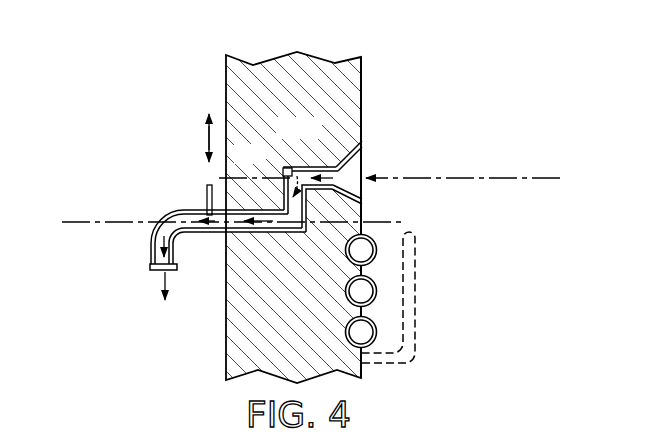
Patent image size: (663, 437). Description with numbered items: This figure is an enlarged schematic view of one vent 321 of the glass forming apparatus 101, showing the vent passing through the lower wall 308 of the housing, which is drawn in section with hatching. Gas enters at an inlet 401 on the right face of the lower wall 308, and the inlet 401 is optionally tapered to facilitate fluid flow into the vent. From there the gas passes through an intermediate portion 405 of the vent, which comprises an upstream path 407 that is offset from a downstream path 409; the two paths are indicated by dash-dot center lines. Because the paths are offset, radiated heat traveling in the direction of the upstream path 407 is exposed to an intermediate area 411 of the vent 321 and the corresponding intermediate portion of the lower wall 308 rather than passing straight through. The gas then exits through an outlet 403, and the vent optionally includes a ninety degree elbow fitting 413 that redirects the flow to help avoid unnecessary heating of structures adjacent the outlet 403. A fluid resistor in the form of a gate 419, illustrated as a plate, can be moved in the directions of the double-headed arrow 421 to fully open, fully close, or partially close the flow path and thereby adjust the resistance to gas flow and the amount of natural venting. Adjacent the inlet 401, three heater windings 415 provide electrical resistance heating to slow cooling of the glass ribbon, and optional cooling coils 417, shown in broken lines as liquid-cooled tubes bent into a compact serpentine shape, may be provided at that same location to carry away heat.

The glass forming apparatus 101 is at (207, 83).
The lower wall 308 is at (322, 68).
The vent 321 is at (367, 142).
The inlet 401 is at (365, 152).
The outlet 403 is at (156, 271).
The intermediate portion 405 is at (316, 167).
The upstream path 407 is at (540, 180).
The downstream path 409 is at (80, 221).
The intermediate area 411 is at (283, 170).
The 90° elbow fitting 413 is at (162, 212).
The heater windings 415 is at (380, 285).
The cooling coils 417 is at (414, 318).
The gate 419 is at (207, 186).
The double-headed arrow 421 is at (205, 137).